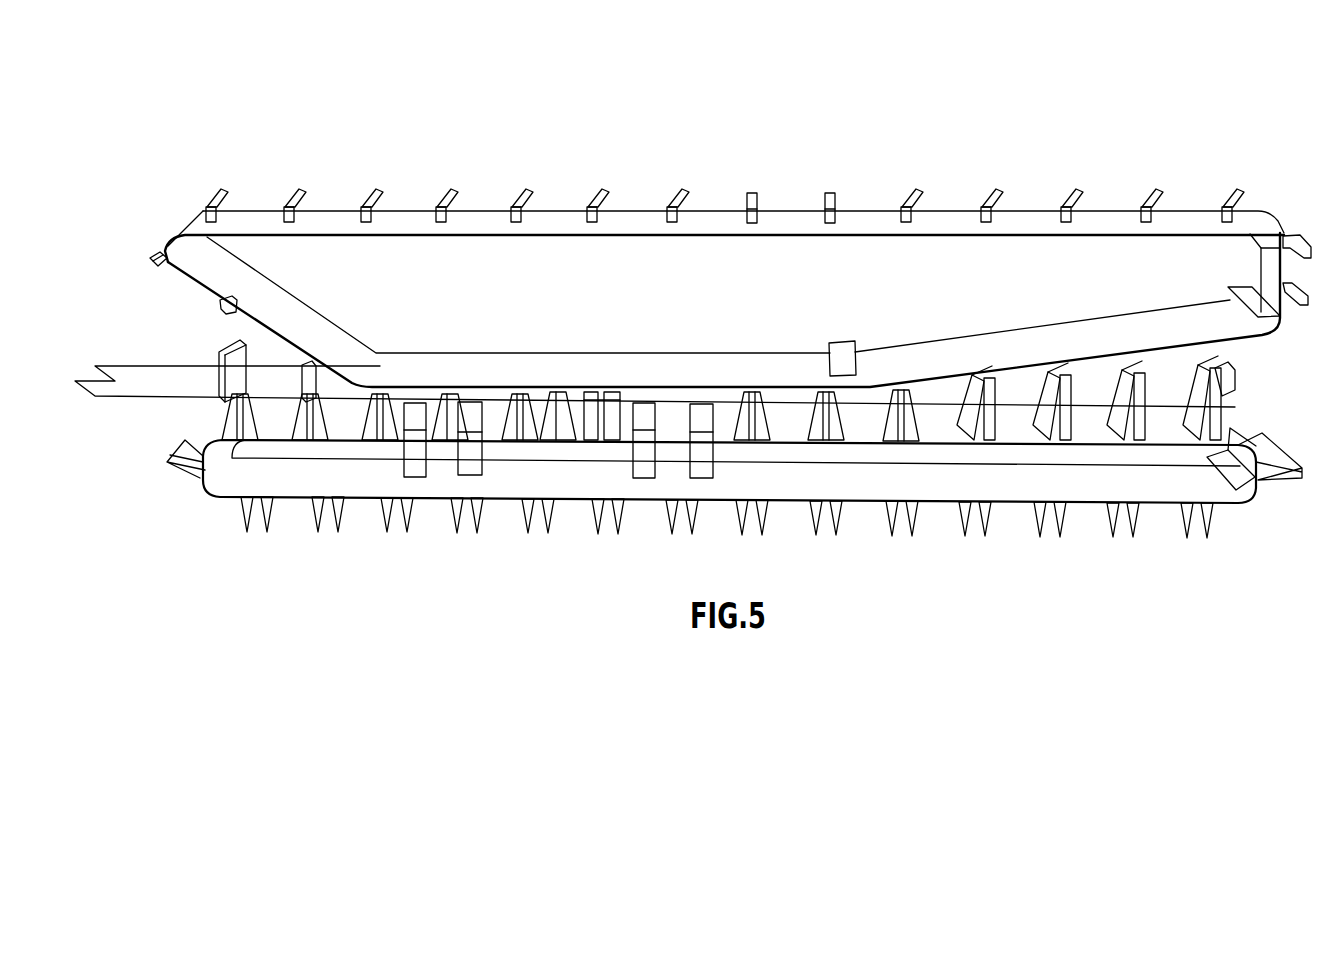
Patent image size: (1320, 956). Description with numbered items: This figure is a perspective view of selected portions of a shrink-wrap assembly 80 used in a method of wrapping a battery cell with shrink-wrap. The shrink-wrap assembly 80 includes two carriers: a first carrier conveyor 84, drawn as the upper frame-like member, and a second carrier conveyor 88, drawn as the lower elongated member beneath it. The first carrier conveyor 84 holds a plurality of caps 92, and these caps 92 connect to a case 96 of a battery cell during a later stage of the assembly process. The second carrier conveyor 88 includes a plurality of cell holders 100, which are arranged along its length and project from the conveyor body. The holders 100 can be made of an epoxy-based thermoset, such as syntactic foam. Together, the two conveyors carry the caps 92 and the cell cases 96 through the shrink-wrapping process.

The shrink-wrap assembly 80 is at (1178, 140).
The first carrier conveyor 84 is at (707, 220).
The second carrier conveyor 88 is at (597, 490).
The cap 92 is at (153, 266).
The case 96 is at (222, 374).
The cell holder 100 is at (263, 533).